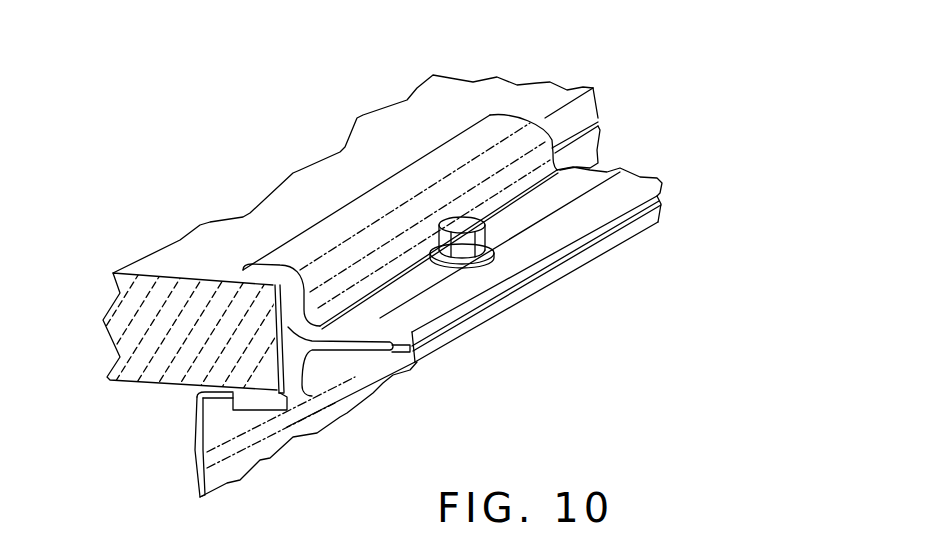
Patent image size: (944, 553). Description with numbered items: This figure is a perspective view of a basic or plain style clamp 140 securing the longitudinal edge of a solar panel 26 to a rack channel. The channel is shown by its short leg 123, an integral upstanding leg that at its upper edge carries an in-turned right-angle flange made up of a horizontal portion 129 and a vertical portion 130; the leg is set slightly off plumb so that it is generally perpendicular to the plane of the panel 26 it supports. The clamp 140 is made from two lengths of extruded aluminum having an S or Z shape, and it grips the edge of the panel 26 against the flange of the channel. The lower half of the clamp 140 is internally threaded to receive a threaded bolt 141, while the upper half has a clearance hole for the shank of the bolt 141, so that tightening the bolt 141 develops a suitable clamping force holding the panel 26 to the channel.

The solar panel 26 is at (362, 158).
The vertical portion 130 is at (275, 340).
The horizontal portion 129 is at (247, 385).
The short leg 123 is at (197, 427).
The plain style clamp 140 is at (618, 163).
The threaded bolt 141 is at (475, 233).